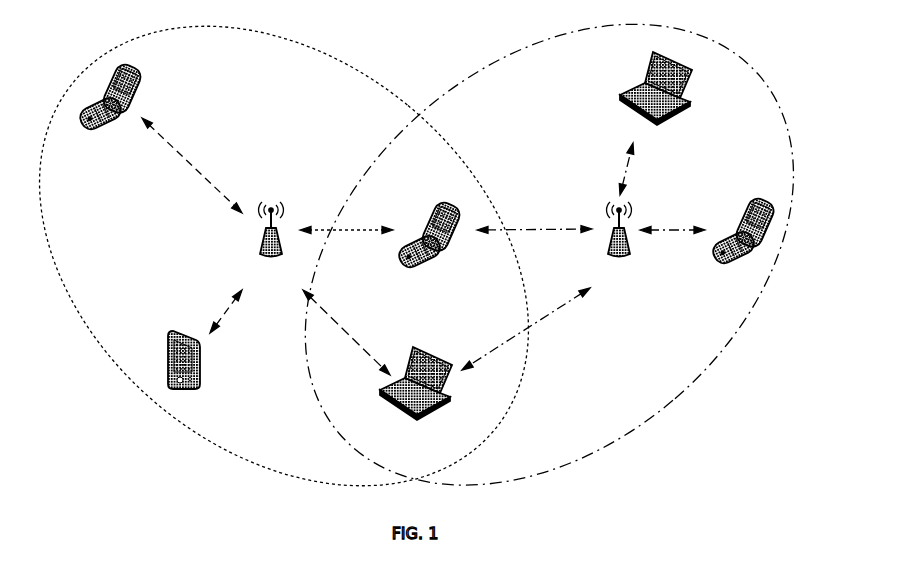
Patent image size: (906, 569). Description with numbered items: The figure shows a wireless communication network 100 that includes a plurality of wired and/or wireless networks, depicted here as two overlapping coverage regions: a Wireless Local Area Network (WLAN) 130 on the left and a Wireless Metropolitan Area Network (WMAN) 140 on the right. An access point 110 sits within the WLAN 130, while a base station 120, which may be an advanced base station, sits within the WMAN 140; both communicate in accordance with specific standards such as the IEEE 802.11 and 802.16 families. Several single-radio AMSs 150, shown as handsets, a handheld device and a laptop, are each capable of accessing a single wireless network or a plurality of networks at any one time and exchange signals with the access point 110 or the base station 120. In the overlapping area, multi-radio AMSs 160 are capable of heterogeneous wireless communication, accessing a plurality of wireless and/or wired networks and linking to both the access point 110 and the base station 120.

The wireless communication network 100 is at (441, 284).
The access point 110 is at (270, 244).
The base station 120 is at (619, 244).
The Wireless Local Area Network (WLAN) 130 is at (140, 388).
The Wireless Metropolitan Area Network (WMAN) 140 is at (705, 370).
The single-radio AMS 150 is at (427, 233).
The multi-radio AMS 160 is at (421, 318).